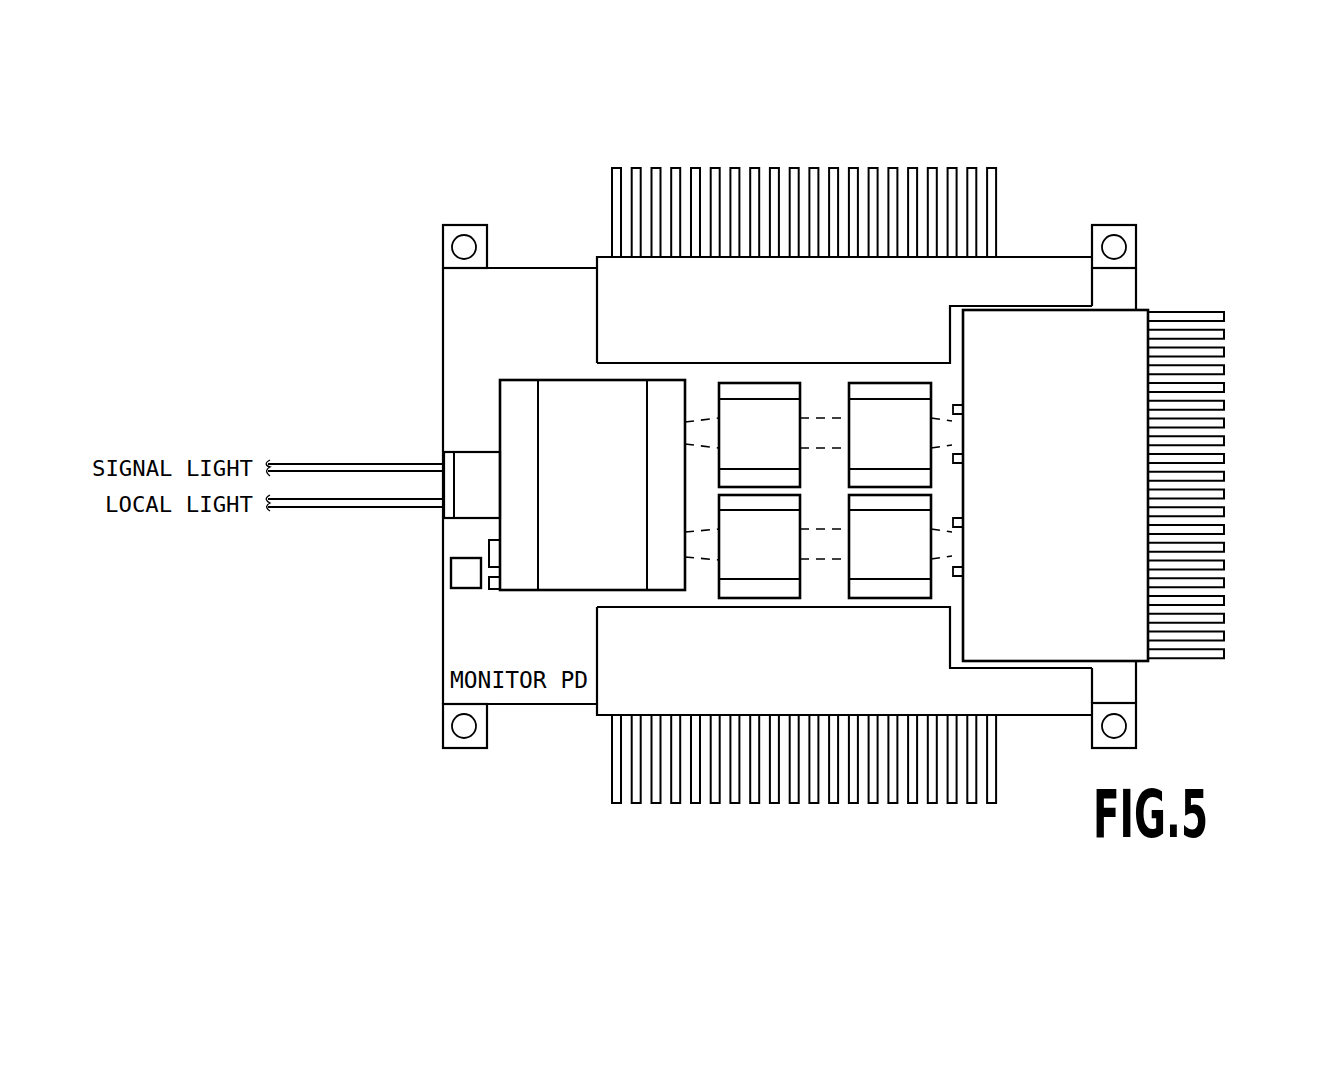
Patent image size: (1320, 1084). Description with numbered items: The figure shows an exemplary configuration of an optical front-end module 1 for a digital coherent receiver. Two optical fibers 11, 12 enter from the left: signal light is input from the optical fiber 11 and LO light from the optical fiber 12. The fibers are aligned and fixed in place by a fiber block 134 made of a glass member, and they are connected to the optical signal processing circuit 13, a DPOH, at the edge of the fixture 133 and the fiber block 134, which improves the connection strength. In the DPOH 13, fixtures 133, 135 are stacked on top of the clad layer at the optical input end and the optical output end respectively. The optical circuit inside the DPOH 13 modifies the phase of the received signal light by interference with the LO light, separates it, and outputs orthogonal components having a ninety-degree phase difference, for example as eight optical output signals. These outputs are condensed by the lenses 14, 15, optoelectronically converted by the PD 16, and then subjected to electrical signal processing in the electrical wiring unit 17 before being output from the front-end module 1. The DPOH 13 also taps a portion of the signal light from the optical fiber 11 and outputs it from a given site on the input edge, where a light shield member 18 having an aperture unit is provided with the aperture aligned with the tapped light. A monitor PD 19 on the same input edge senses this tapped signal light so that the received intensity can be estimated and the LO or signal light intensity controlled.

The front-end module 1 is at (1218, 192).
The optical fiber 11 is at (325, 462).
The optical fiber 12 is at (320, 510).
The optical signal processing circuit 13 is at (582, 450).
The fixture 133 is at (519, 380).
The fiber block 134 is at (450, 452).
The fixture 135 is at (670, 380).
The lens 14 is at (762, 382).
The lens 15 is at (891, 382).
The photodiode (PD) 16 is at (1090, 452).
The electrical wiring unit 17 is at (1148, 308).
The light shield member 18 is at (490, 590).
The monitor PD 19 is at (466, 592).